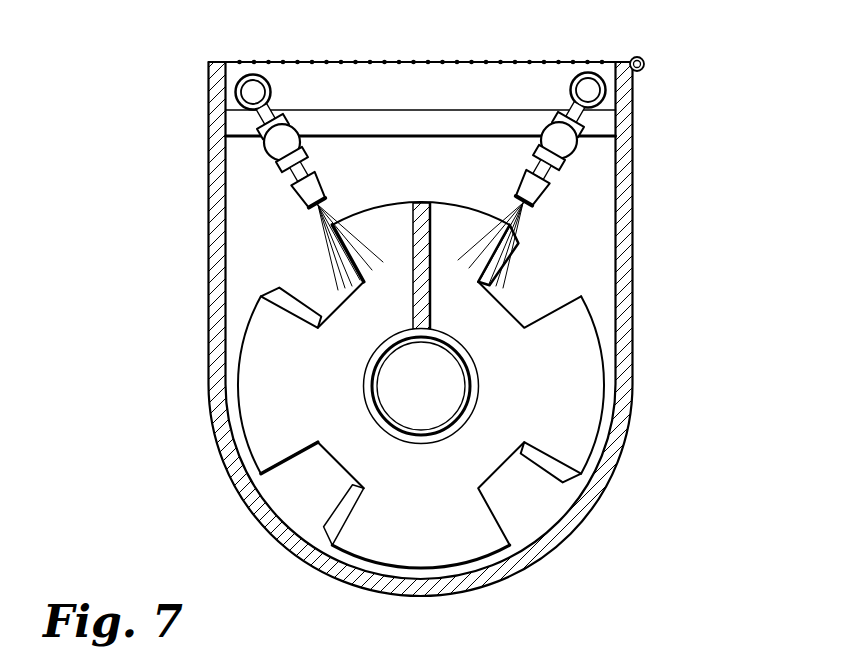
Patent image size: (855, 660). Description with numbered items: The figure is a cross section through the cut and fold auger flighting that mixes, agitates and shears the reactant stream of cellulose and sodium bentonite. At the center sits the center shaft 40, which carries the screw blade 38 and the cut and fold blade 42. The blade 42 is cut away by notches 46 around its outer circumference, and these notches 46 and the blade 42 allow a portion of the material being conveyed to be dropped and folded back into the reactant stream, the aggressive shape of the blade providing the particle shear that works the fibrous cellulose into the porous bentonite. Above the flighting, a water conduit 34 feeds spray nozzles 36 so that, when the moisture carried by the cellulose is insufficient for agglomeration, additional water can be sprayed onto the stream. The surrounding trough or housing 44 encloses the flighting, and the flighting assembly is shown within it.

The water conduit 34 is at (592, 90).
The spray nozzles 36 is at (542, 200).
The screw blade 38 is at (253, 93).
The center shaft 40 is at (270, 165).
The blade 42 is at (267, 386).
The housing 44 is at (465, 326).
The notches 46 is at (333, 305).